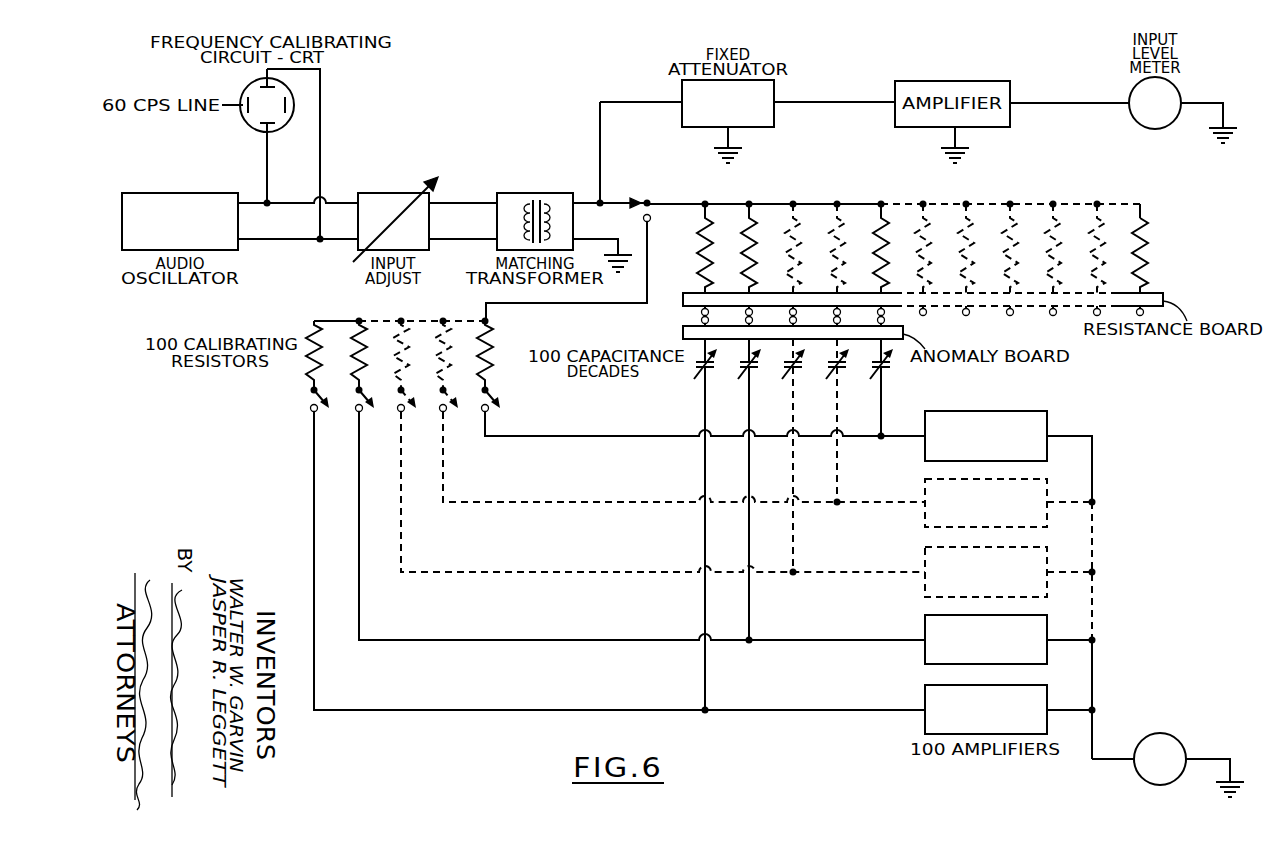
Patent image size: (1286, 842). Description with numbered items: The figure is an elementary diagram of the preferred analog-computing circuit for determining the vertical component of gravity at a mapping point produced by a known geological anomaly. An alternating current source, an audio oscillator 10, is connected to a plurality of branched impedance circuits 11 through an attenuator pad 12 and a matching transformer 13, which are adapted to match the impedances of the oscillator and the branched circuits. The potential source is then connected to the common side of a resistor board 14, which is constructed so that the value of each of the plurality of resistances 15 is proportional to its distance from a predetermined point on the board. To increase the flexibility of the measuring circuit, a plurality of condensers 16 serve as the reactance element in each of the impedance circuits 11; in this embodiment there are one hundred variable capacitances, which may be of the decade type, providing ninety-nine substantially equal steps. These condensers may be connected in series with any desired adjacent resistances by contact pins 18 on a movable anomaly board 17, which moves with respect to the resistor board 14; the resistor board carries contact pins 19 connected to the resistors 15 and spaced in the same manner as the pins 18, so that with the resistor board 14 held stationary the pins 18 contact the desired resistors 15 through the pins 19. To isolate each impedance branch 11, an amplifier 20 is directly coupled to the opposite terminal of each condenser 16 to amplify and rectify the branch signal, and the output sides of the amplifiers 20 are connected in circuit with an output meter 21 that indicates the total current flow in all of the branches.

The audio oscillator 10 is at (190, 233).
The branched impedance circuits 11 is at (879, 408).
The attenuator pad 12 is at (403, 192).
The matching transformer 13 is at (546, 192).
The resistor board 14 is at (1163, 298).
The resistances 15 is at (699, 230).
The condensers 16 is at (711, 371).
The anomaly board 17 is at (903, 332).
The contact pins 18 is at (701, 321).
The contact pins 19 is at (700, 311).
The amplifier 20 is at (996, 444).
The output meter 21 is at (1178, 742).